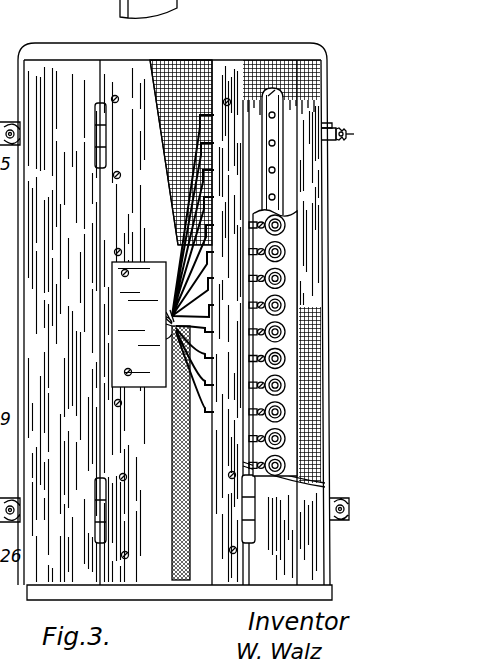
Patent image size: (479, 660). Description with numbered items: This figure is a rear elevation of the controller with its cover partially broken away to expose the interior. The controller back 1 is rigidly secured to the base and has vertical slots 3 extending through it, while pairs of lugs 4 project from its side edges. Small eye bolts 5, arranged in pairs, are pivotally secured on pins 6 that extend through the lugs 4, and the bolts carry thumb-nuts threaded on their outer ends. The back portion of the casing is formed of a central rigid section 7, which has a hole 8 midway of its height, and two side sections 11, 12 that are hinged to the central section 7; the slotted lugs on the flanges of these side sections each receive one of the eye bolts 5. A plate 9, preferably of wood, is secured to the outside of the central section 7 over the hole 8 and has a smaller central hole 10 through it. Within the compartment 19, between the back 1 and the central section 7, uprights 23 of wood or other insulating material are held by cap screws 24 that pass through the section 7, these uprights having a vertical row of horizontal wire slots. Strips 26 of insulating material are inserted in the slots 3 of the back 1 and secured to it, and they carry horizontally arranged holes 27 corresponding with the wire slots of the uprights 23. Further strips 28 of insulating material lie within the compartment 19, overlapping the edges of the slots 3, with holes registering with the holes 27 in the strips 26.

The controller back 1 is at (317, 102).
The vertical slots 3 is at (316, 154).
The pairs of lugs 4 is at (334, 128).
The eye bolts 5 is at (354, 134).
The pins 6 is at (332, 124).
The central rigid section 7 is at (125, 70).
The hole 8 is at (166, 300).
The plate 9 is at (118, 308).
The central hole 10 is at (166, 330).
The side section 11 is at (48, 70).
The side section 12 is at (312, 545).
The compartment 19 is at (313, 282).
The uprights 23 is at (240, 55).
The cap screws 24 is at (121, 408).
The strips 26 is at (272, 100).
The holes 27 is at (276, 197).
The strips of insulating material 28 is at (288, 346).